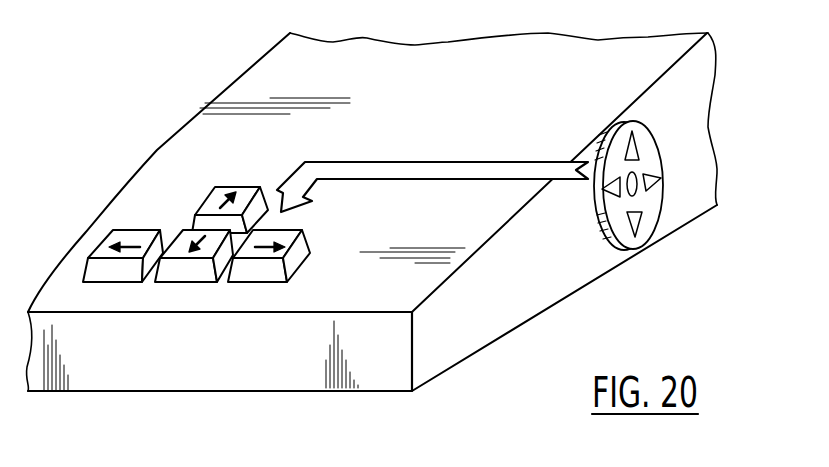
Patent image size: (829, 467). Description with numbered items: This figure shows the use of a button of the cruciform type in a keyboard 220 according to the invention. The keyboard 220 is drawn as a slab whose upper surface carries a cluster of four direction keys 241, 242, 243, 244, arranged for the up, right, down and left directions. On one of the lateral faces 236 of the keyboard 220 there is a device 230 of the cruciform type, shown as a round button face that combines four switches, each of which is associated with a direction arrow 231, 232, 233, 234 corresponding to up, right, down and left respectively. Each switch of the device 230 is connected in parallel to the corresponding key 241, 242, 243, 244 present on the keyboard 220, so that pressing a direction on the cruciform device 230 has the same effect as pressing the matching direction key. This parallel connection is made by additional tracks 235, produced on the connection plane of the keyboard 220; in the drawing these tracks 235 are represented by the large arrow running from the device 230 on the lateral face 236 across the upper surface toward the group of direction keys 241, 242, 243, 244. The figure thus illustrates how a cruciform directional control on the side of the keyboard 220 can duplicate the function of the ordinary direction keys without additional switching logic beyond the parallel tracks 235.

The keyboard 220 is at (712, 102).
The device of the cruciform type 230 is at (679, 196).
The direction arrow 231 is at (643, 140).
The direction arrow 232 is at (658, 203).
The direction arrow 233 is at (645, 240).
The direction arrow 234 is at (612, 160).
The additional tracks 235 is at (433, 168).
The lateral face 236 is at (703, 163).
The key 241 is at (212, 203).
The key 242 is at (260, 276).
The key 243 is at (187, 276).
The key 244 is at (111, 276).